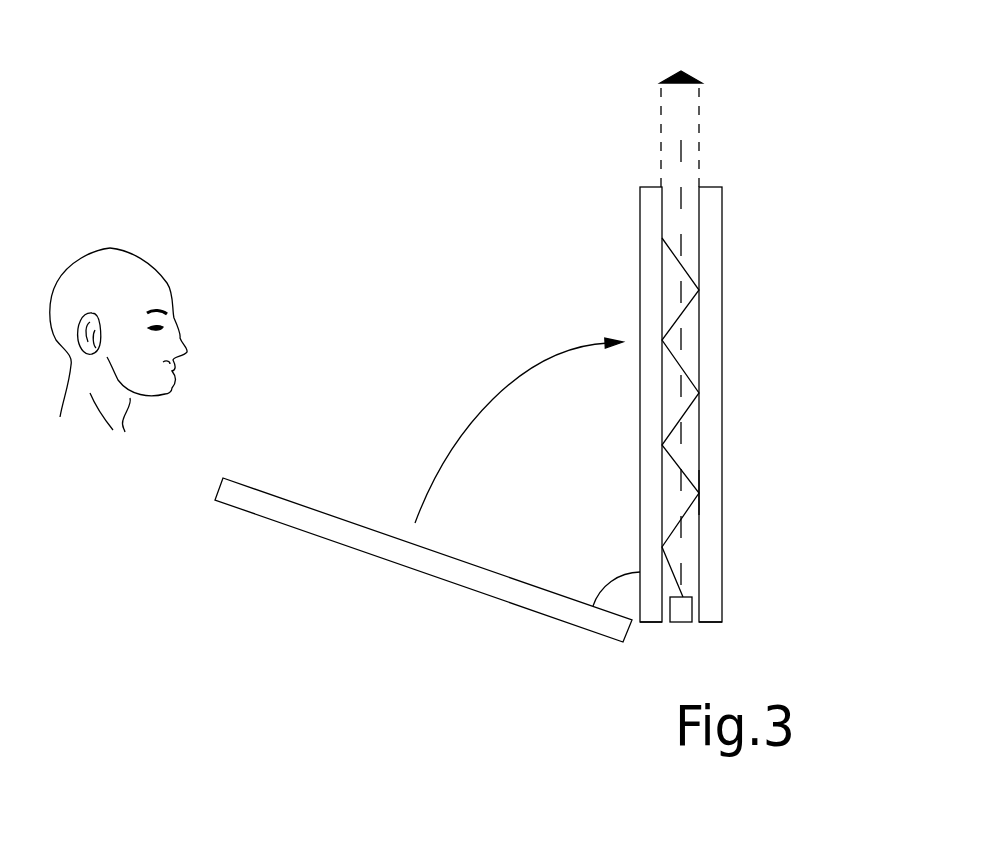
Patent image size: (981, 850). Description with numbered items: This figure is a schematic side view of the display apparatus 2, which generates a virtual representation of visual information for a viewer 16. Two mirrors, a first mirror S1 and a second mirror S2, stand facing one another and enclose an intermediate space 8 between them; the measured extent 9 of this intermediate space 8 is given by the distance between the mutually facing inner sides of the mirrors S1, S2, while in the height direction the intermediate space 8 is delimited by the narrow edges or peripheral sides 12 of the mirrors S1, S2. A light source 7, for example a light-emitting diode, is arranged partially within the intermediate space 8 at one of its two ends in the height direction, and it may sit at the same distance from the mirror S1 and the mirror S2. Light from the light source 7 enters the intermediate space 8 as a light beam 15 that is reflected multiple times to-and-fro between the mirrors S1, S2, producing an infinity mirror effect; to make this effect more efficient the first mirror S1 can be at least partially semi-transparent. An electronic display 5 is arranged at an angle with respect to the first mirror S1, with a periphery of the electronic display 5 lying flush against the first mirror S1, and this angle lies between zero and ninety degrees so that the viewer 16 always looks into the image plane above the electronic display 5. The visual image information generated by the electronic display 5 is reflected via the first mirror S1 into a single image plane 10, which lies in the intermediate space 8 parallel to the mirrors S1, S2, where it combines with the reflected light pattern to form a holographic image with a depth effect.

The viewer 16 is at (110, 248).
The display apparatus 2 is at (431, 322).
The electronic display 5 is at (340, 518).
The first mirror S1 is at (653, 187).
The second mirror S2 is at (722, 233).
The measured extent 9 is at (683, 72).
The intermediate space 8 is at (691, 179).
The light beam 15 is at (688, 410).
The image plane 10 is at (700, 490).
The light source 7 is at (692, 603).
The peripheral sides 12 is at (641, 638).